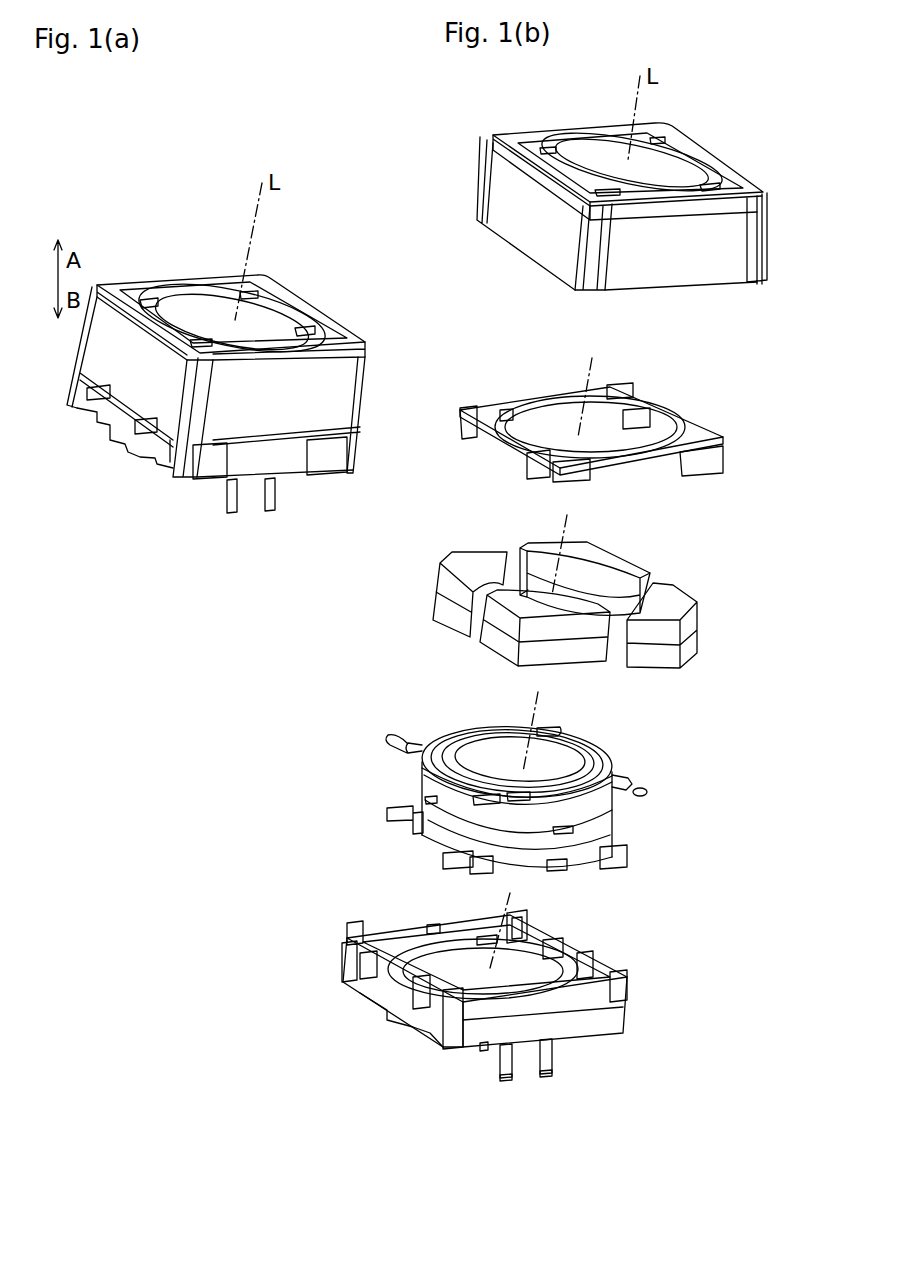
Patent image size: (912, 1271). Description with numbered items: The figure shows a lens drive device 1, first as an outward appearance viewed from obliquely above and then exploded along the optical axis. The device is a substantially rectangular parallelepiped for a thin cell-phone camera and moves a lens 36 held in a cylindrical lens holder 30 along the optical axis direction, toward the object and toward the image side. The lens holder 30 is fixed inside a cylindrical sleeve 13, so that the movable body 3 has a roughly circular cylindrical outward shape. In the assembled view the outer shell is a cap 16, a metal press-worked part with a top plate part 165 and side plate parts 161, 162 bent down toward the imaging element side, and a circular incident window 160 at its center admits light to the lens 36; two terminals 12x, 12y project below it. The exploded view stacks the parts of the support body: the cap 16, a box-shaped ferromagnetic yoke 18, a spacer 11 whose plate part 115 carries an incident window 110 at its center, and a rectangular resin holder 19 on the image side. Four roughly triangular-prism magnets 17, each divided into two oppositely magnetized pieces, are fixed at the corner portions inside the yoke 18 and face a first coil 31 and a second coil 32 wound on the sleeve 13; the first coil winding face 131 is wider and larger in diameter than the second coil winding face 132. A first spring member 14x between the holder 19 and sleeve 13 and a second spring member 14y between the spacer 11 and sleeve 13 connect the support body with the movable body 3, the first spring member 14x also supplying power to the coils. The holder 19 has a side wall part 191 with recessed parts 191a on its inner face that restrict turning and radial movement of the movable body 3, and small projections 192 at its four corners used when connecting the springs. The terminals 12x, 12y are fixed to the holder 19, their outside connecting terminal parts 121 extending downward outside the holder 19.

In FIG. 1A, the lens drive device 1 is at (302, 254).
In FIG. 1A, the cap 16 is at (207, 366).
In FIG. 1B, the cap 16 is at (614, 189).
In FIG. 1A, the incident window 160 is at (196, 283).
In FIG. 1A, the top plate part 165 is at (206, 282).
In FIG. 1B, the top plate part 165 is at (688, 138).
In FIG. 1A, the side plate part 161 is at (104, 345).
In FIG. 1B, the side plate part 161 is at (508, 226).
In FIG. 1A, the side plate part 162 is at (326, 412).
In FIG. 1B, the side plate part 162 is at (732, 244).
In FIG. 1A, the terminal 12x is at (230, 514).
In FIG. 1B, the terminal 12x is at (517, 1057).
In FIG. 1A, the terminal 12y is at (269, 512).
In FIG. 1B, the terminal 12y is at (553, 1047).
In FIG. 1B, the yoke 18 is at (770, 220).
In FIG. 1B, the spacer 11 is at (570, 420).
In FIG. 1B, the incident window 110 is at (566, 400).
In FIG. 1B, the plate part 115 is at (510, 405).
In FIG. 1B, the magnet 17 is at (547, 543).
In FIG. 1B, the movable body 3 is at (513, 778).
In FIG. 1B, the sleeve 13 is at (594, 750).
In FIG. 1B, the lens holder 30 is at (495, 730).
In FIG. 1B, the lens 36 is at (485, 752).
In FIG. 1B, the second coil 32 is at (477, 763).
In FIG. 1B, the second coil winding face 132 is at (457, 792).
In FIG. 1B, the first coil 31 is at (470, 811).
In FIG. 1B, the first coil winding face 131 is at (435, 830).
In FIG. 1B, the first spring member 14x is at (533, 868).
In FIG. 1B, the second spring member 14y is at (612, 762).
In FIG. 1B, the holder 19 is at (521, 1003).
In FIG. 1B, the side wall part 191 is at (392, 933).
In FIG. 1B, the recessed part 191a is at (432, 925).
In FIG. 1B, the small projection 192 is at (390, 942).
In FIG. 1B, the outside connecting terminal part 121 is at (453, 1055).